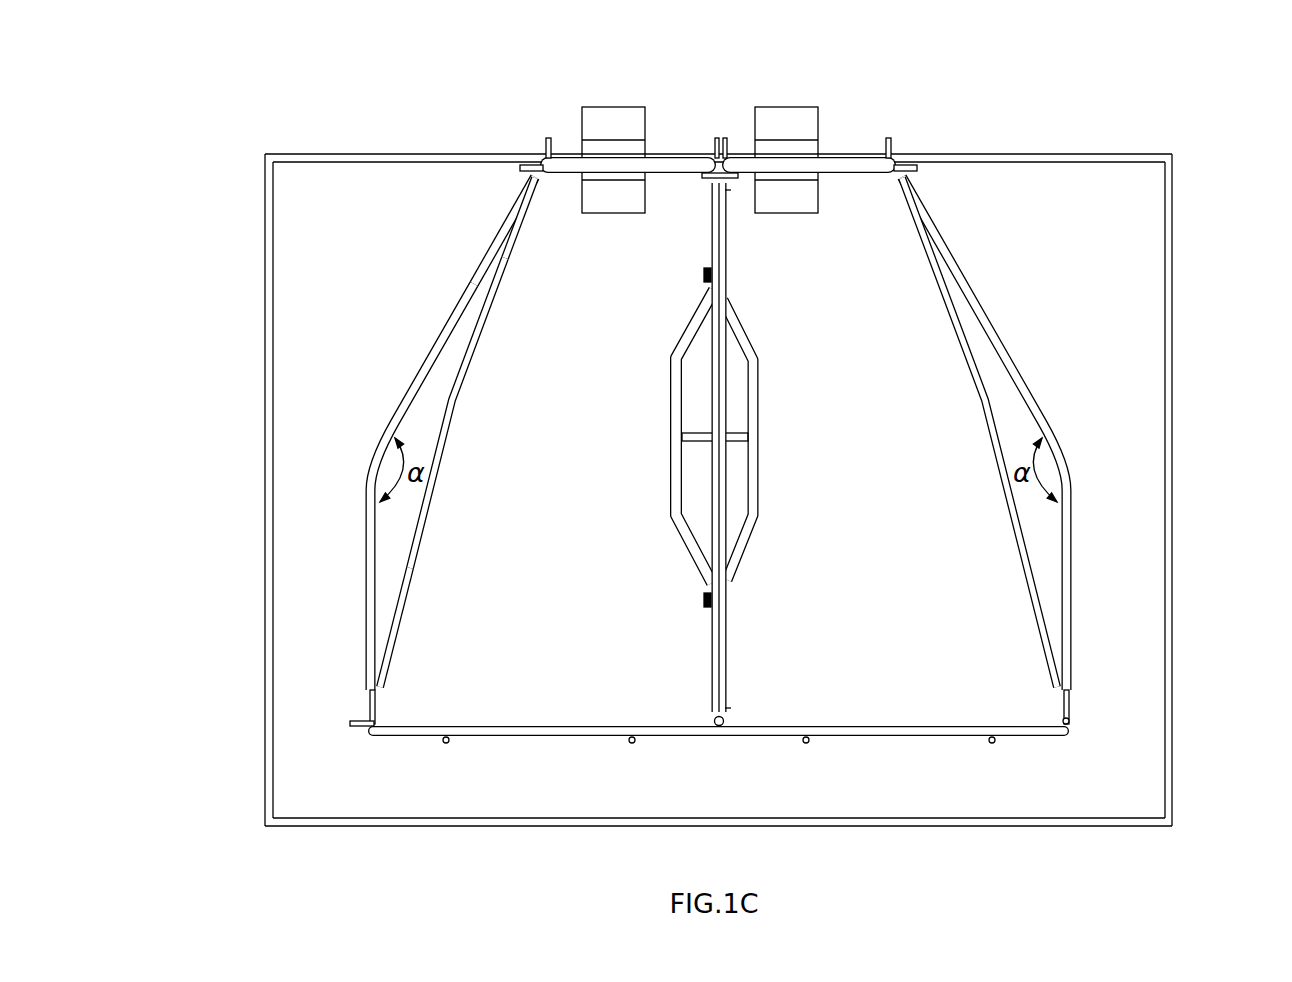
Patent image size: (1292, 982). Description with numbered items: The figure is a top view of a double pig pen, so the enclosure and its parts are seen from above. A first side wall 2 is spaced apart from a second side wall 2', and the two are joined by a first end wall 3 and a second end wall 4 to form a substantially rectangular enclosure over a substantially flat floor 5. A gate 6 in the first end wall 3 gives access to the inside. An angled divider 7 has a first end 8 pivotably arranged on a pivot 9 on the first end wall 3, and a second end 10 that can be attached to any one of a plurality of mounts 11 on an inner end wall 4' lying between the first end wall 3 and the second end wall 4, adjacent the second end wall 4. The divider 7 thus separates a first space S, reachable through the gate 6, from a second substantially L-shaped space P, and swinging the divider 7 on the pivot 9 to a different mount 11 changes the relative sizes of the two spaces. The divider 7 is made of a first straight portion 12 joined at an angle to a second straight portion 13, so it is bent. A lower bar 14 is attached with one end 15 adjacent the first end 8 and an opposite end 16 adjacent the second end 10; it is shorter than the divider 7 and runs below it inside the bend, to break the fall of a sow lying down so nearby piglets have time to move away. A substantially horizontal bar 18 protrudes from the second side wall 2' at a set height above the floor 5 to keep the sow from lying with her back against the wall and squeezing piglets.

The first side wall 2 is at (734, 490).
The second side wall 2' is at (773, 454).
The first end wall 3 is at (375, 154).
The second end wall 4 is at (718, 851).
The inner end wall 4' is at (718, 773).
The floor 5 is at (1120, 203).
The gate 6 is at (668, 153).
The angled divider 7 is at (405, 392).
The first end 8 is at (538, 178).
The pivot 9 is at (541, 163).
The second end 10 is at (374, 706).
The mounts 11 is at (369, 740).
The first straight portion 12 is at (473, 273).
The second straight portion 13 is at (367, 548).
The lower bar 14 is at (460, 403).
The end of lower bar 15 is at (500, 280).
The opposite end of lower bar 16 is at (385, 657).
The horizontal bar 18 is at (670, 490).
The second space P is at (352, 287).
The first space S is at (611, 320).